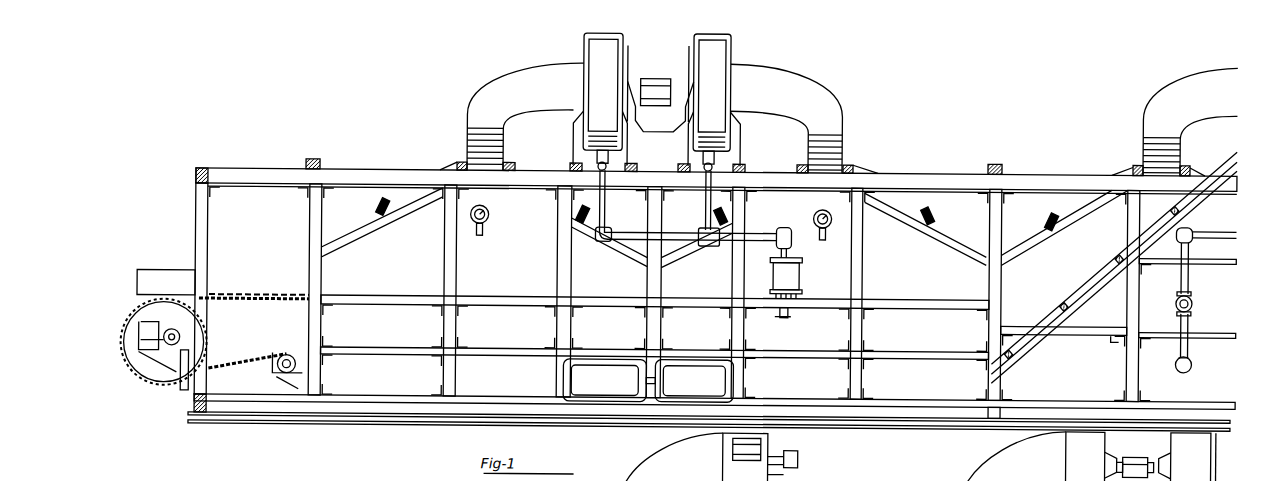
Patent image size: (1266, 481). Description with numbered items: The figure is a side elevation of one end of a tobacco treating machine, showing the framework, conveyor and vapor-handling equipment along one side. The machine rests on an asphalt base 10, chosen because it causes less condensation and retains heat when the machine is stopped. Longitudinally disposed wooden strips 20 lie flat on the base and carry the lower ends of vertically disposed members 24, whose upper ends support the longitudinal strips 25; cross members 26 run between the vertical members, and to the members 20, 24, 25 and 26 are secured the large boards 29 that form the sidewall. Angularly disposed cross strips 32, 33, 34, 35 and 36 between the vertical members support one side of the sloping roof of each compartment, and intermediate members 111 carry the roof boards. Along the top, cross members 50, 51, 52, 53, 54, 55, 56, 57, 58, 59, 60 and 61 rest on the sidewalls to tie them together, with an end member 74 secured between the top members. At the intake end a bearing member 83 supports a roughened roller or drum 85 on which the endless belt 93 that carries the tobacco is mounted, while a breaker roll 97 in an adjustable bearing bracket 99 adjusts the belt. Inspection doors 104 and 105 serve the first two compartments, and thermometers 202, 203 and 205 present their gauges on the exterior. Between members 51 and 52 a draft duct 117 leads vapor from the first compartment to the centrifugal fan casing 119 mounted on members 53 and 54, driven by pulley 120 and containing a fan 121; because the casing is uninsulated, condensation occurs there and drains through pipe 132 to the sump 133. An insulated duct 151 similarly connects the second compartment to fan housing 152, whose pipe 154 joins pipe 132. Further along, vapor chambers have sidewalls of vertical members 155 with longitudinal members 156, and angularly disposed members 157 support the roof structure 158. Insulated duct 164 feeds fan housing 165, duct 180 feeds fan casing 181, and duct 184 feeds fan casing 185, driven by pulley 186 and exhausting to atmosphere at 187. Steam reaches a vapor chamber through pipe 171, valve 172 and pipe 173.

The base 10 is at (298, 424).
The longitudinally disposed strips 20 is at (392, 384).
The vertically disposed members 24 is at (196, 248).
The longitudinally disposed strips 25 is at (391, 168).
The cross members 26 is at (392, 286).
The boards 29 is at (382, 242).
The angularly disposed cross strip 32 is at (380, 231).
The angularly disposed cross strip 33 is at (626, 250).
The angularly disposed cross strip 34 is at (681, 251).
The angularly disposed cross strip 35 is at (938, 242).
The angularly disposed cross strip 36 is at (1039, 244).
The cross member 50 is at (312, 158).
The cross member 51 is at (457, 160).
The cross member 52 is at (528, 158).
The cross member 53 is at (570, 160).
The cross member 54 is at (631, 160).
The cross member 55 is at (683, 160).
The cross member 56 is at (742, 160).
The cross member 57 is at (802, 160).
The cross member 58 is at (851, 160).
The cross member 59 is at (1001, 158).
The cross member 60 is at (1133, 160).
The cross member 61 is at (1192, 153).
The end member 74 is at (195, 166).
The bearing member 83 is at (182, 380).
The roughened roller or drum 85 is at (163, 341).
The endless belt 93 is at (265, 299).
The breaker roll 97 is at (292, 350).
The adjustable bearing bracket 99 is at (284, 374).
The inspection door 104 is at (609, 380).
The inspection door 105 is at (694, 381).
The intermediate members 111 is at (378, 205).
The draft duct 117 is at (468, 125).
The centrifugal fan casing 119 is at (583, 42).
The pulley 120 is at (661, 76).
The fan 121 is at (725, 446).
The pipe 132 is at (607, 212).
The sump 133 is at (803, 266).
The insulated duct 151 is at (845, 112).
The fan housing 152 is at (730, 43).
The pipe 154 is at (704, 208).
The vertical members 155 is at (1128, 319).
The longitudinal members 156 is at (1113, 335).
The angularly disposed members 157 is at (1035, 351).
The roof structure 158 is at (1040, 308).
The insulated duct 164 is at (1194, 84).
The fan housing 165 is at (1192, 457).
The pipe 171 is at (1193, 356).
The valve 172 is at (1193, 298).
The pipe 173 is at (1190, 248).
The insulated duct 180 is at (975, 462).
The fan casing 181 is at (1117, 456).
The insulated duct 184 is at (625, 462).
The fan casing 185 is at (786, 478).
The pulley 186 is at (800, 462).
The exhaust 187 is at (770, 444).
The thermometer 202 is at (489, 214).
The thermometer 203 is at (815, 214).
The thermometer 205 is at (165, 270).